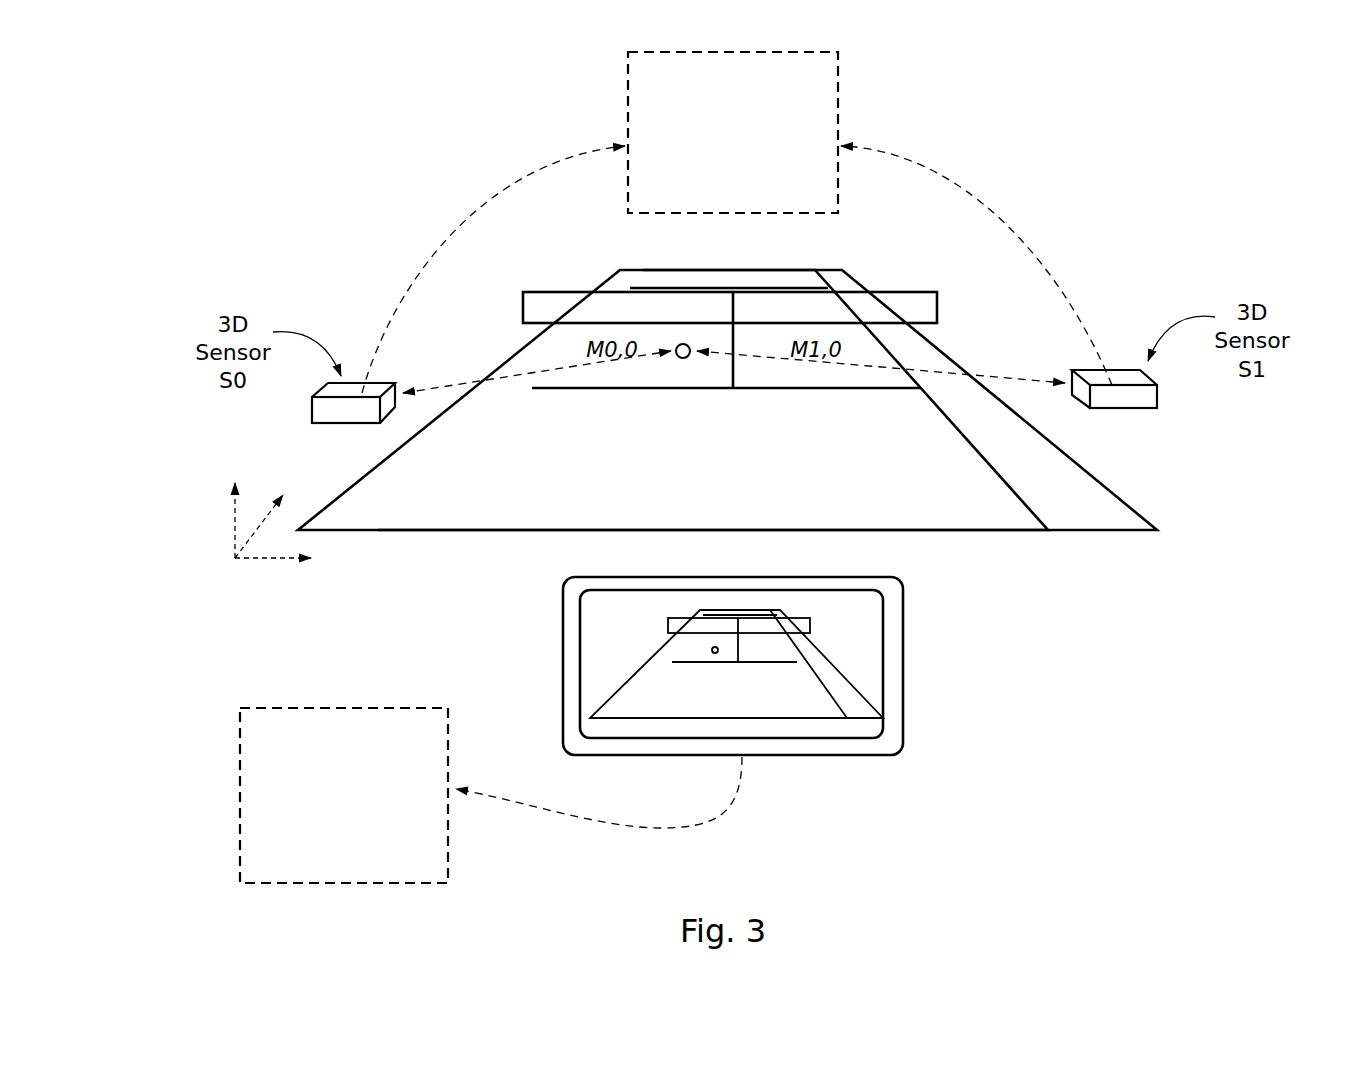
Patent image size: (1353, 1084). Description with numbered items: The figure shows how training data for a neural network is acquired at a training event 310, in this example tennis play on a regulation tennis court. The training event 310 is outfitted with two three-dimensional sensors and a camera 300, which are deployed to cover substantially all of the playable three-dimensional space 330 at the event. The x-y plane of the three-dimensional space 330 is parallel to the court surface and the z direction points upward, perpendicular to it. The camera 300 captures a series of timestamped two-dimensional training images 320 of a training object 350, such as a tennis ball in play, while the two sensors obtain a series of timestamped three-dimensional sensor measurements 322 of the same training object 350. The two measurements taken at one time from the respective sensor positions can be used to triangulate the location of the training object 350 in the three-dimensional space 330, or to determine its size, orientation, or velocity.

The camera 300 is at (839, 775).
The training event 310 is at (1032, 619).
The timestamped 2D training images 320 is at (491, 795).
The timestamped 3D sensor measurements 322 is at (737, 222).
The 3D space 330 is at (213, 574).
The training object 350 is at (688, 365).